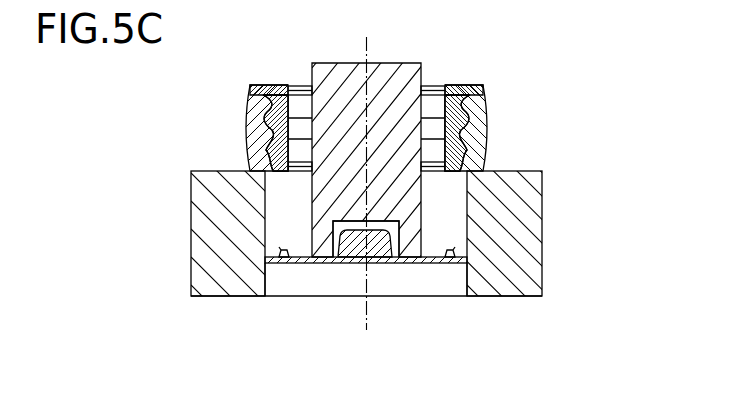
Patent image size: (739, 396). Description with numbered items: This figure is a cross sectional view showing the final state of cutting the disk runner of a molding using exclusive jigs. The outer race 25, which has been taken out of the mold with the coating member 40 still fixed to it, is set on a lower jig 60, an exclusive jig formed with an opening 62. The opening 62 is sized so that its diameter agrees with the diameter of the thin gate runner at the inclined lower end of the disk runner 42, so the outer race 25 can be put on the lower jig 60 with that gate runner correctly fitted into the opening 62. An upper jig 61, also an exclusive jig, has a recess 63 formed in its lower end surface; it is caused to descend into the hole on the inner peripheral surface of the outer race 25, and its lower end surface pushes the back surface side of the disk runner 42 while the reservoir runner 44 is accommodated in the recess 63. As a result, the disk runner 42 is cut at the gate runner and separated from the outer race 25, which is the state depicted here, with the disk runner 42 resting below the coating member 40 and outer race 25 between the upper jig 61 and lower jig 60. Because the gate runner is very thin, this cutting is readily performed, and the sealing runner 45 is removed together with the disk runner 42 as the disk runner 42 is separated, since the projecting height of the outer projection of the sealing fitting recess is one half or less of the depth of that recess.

The outer race 25 is at (463, 85).
The coating member 40 is at (488, 126).
The disk runner 42 is at (319, 263).
The reservoir runner 44 is at (378, 263).
The sealing runner 45 is at (285, 249).
The lower jig 60 is at (543, 226).
The upper jig 61 is at (342, 62).
The opening 62 is at (468, 270).
The recess 63 is at (378, 222).